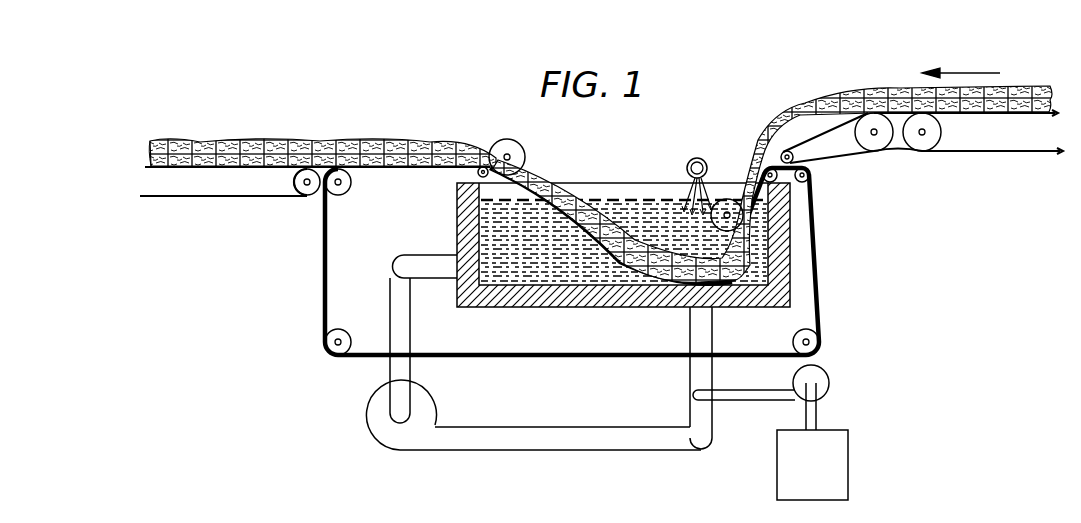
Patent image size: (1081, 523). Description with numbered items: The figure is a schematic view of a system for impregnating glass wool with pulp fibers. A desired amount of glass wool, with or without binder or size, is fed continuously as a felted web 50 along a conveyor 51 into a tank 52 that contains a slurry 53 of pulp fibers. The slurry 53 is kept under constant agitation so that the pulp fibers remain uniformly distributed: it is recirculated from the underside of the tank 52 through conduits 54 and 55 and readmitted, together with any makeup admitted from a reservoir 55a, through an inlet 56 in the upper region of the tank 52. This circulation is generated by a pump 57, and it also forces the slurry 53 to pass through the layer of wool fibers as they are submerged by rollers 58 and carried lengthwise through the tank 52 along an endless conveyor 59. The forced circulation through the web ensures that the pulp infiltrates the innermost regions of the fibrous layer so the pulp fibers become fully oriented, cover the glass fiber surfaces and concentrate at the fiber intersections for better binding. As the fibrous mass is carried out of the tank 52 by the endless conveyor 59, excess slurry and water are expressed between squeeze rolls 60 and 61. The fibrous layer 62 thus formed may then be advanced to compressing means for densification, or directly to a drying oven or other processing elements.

The felted web 50 is at (797, 126).
The conveyor 51 is at (846, 162).
The tank 52 is at (620, 305).
The slurry 53 is at (622, 196).
The conduit 54 is at (427, 258).
The conduit 55 is at (565, 440).
The reservoir 55a is at (845, 447).
The inlet 56 is at (693, 158).
The pump 57 is at (425, 406).
The rollers 58 is at (716, 199).
The endless conveyor 59 is at (556, 339).
The squeeze roll 60 is at (518, 150).
The squeeze roll 61 is at (477, 172).
The fibrous layer 62 is at (402, 153).